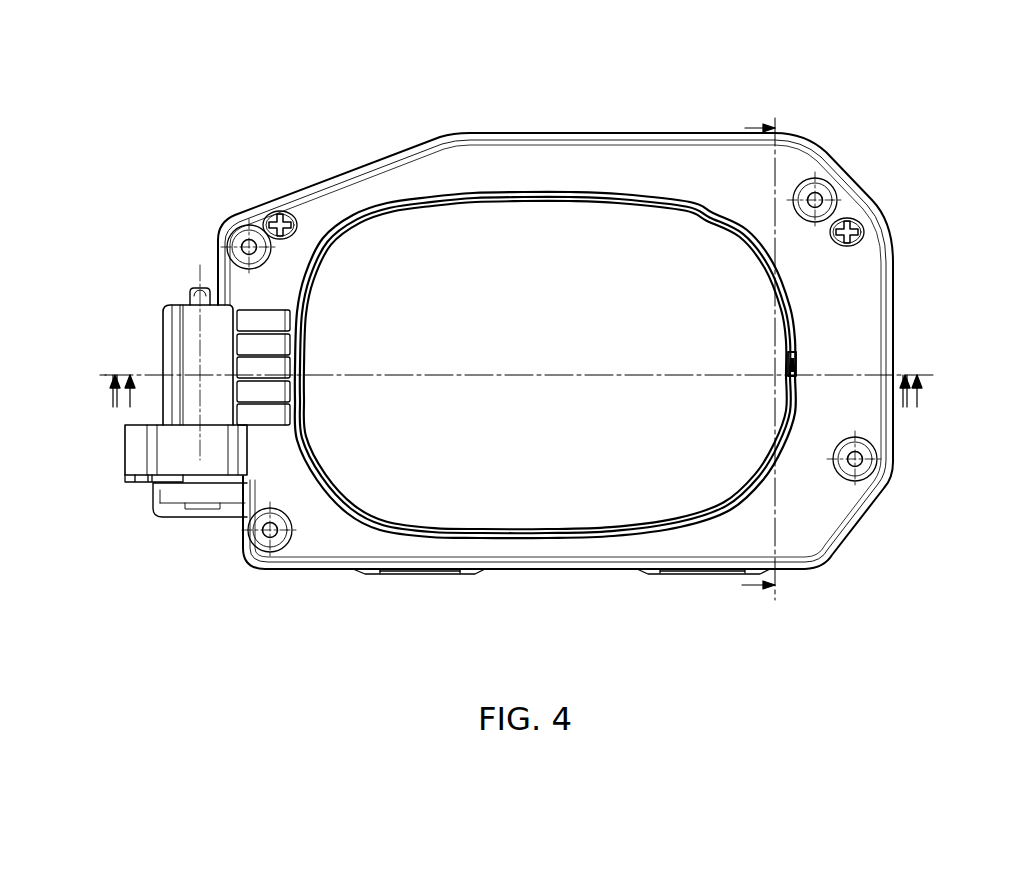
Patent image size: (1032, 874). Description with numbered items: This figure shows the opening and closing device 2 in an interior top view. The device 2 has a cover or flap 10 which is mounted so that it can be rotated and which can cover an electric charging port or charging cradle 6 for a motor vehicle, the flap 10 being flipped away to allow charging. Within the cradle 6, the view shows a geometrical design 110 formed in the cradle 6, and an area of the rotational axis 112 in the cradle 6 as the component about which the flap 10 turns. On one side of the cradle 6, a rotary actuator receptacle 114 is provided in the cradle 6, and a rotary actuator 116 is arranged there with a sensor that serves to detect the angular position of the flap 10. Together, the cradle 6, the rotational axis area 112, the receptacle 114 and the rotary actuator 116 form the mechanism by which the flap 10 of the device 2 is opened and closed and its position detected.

The opening and closing device 2 is at (614, 56).
The cradle 6 is at (553, 162).
The flap 10 is at (467, 260).
The geometrical design 110 is at (263, 322).
The area of the rotational axis 112 is at (200, 337).
The rotary actuator receptacle 114 is at (148, 455).
The rotary actuator 116 is at (220, 518).